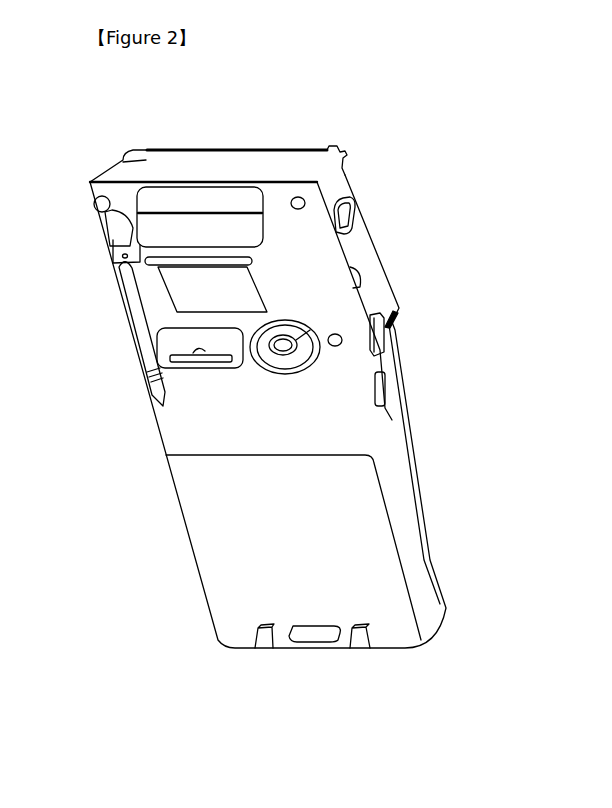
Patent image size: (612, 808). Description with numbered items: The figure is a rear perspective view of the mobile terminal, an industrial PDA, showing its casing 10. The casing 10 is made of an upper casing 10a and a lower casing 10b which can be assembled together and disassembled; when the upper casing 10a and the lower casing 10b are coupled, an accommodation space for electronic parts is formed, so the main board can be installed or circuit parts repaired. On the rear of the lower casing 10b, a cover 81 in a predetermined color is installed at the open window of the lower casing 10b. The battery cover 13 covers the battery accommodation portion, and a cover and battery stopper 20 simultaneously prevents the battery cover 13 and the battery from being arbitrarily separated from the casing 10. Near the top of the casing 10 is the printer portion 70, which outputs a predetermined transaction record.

The casing 10 is at (295, 399).
The upper casing 10a is at (397, 412).
The lower casing 10b is at (355, 444).
The battery cover 13 is at (355, 517).
The cover and battery stopper 20 is at (313, 636).
The printer portion 70 is at (348, 153).
The cover 81 is at (198, 223).